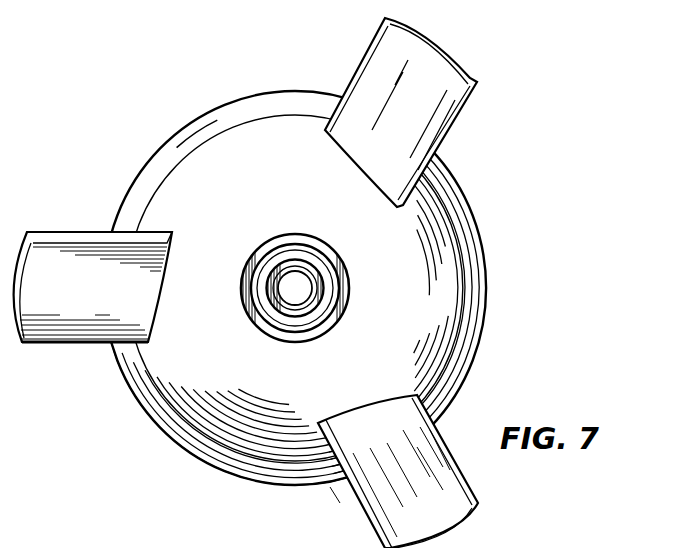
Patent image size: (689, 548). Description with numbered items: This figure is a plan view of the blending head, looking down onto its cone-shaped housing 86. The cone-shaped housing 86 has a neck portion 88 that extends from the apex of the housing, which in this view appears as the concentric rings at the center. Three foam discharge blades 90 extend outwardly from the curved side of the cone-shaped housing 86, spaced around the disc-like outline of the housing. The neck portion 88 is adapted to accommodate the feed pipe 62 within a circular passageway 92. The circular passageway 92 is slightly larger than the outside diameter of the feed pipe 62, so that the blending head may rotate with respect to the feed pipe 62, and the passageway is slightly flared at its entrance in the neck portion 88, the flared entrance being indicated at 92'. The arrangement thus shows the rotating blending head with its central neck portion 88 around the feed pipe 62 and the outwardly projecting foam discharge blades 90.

The cone-shaped housing 86 is at (400, 251).
The neck portion 88 is at (304, 305).
The foam discharge blades 90 is at (378, 74).
The circular passageway 92 is at (276, 304).
The flared entrance of circular passageway 92' is at (328, 297).
The feed pipe 62 is at (298, 319).